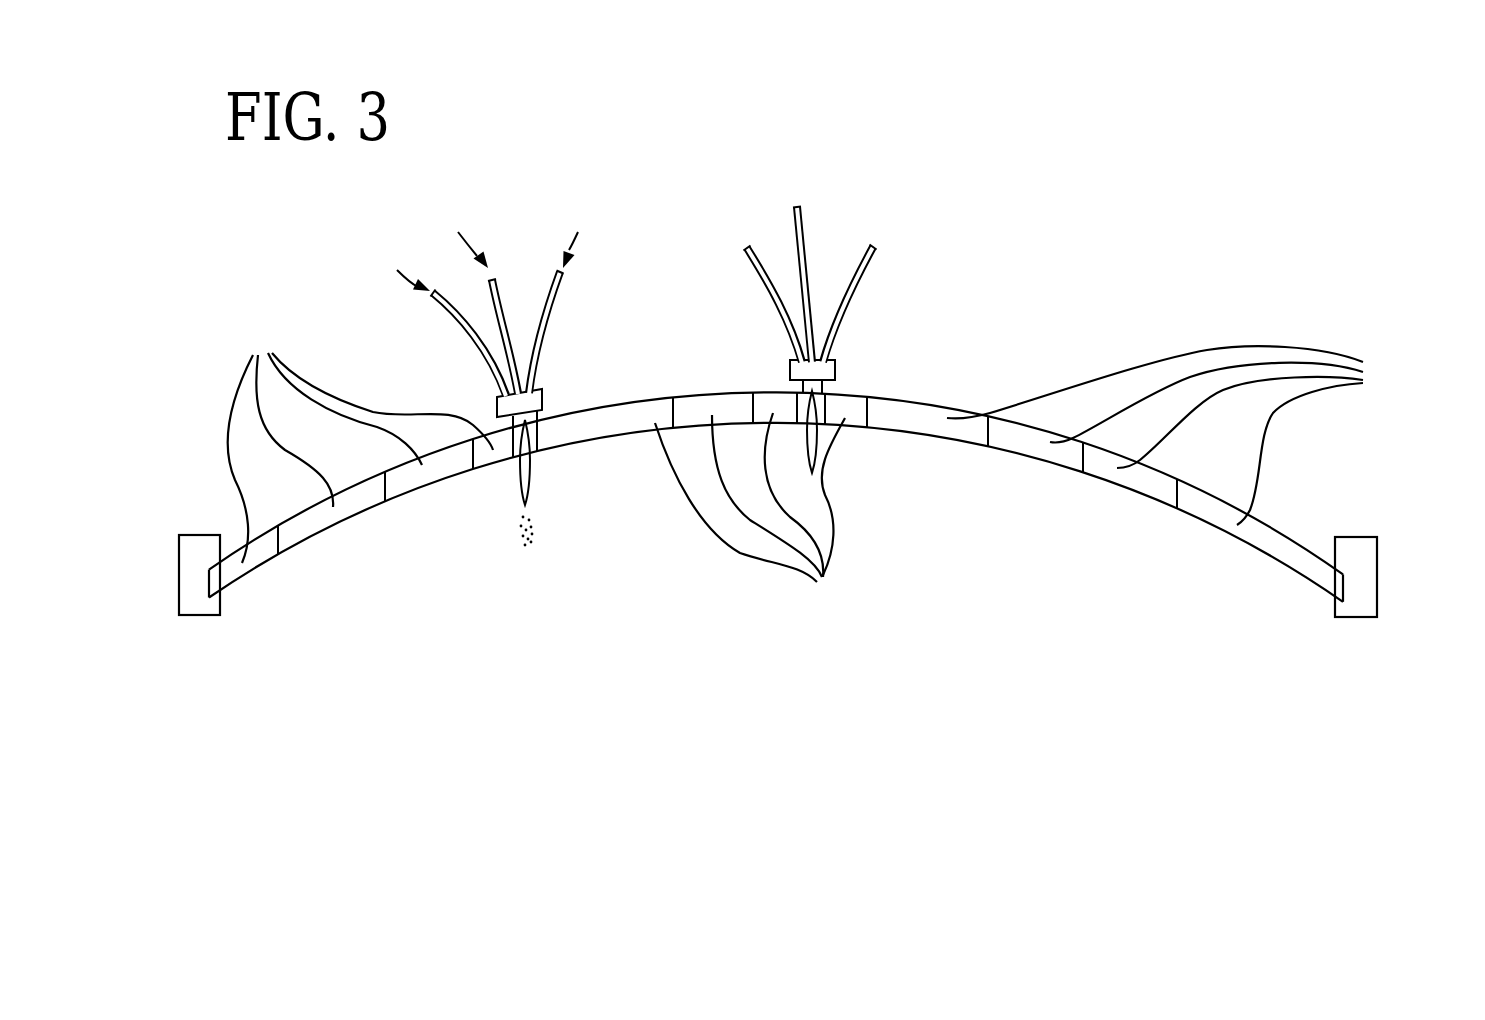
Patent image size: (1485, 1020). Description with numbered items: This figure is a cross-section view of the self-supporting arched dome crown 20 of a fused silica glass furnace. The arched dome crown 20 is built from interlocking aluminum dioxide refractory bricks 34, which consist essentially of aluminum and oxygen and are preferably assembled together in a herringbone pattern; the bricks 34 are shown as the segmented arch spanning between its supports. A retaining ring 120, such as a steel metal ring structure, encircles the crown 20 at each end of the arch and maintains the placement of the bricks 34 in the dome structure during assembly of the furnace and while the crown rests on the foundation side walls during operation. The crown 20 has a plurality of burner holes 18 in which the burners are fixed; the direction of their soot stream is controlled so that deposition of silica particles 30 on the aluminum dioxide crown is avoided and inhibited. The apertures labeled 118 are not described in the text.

The burner holes 18 is at (770, 190).
The arched dome crown 20 is at (1135, 306).
The silica particles 30 is at (497, 549).
The refractory bricks 34 is at (814, 466).
The aperture 118 is at (558, 455).
The retaining ring 120 is at (202, 634).